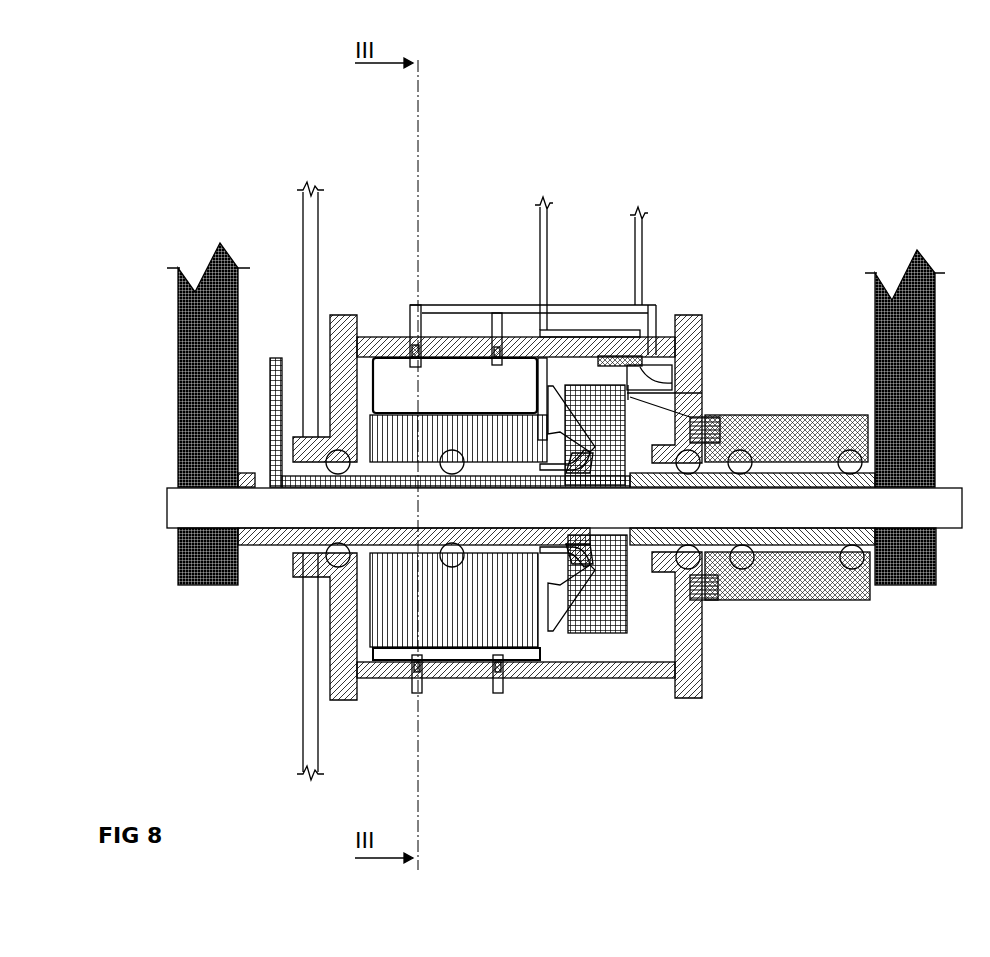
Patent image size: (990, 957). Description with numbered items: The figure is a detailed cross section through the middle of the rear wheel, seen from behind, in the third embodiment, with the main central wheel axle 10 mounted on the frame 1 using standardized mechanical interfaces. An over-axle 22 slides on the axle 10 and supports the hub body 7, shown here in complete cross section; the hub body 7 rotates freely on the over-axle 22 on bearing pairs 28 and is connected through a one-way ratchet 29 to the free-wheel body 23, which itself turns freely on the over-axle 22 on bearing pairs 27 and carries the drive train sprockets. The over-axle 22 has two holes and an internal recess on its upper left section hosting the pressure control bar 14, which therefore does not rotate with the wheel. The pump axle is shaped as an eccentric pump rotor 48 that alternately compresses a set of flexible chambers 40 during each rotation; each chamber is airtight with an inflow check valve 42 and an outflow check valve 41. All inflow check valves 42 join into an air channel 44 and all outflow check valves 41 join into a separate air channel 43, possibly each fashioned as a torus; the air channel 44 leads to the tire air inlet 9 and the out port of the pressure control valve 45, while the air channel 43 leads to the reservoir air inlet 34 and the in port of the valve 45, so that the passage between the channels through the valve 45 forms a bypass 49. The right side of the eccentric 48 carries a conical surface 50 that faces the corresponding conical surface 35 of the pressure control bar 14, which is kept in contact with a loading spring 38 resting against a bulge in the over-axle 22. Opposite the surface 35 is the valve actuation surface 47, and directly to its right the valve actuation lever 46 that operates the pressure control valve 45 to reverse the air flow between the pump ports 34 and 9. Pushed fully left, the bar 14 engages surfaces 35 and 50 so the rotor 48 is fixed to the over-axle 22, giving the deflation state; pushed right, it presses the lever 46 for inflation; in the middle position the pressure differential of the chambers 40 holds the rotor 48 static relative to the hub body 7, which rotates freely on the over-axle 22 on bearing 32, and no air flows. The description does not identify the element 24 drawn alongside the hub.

The frame 1 is at (220, 280).
The hub body 7 is at (345, 350).
The tire air inlet 9 is at (587, 360).
The main central wheel axle 10 is at (950, 520).
The pressure control bar 14 is at (272, 360).
The over-axle 22 is at (790, 478).
The free-wheel body 23 is at (785, 600).
The support 24 is at (317, 250).
The bearing pairs 27 is at (745, 565).
The bearing pairs 28 is at (323, 580).
The one-way ratchet 29 is at (720, 423).
The bearing 32 is at (447, 640).
The reservoir air inlet 34 is at (540, 330).
The conical surface 35 is at (578, 630).
The loading spring 38 is at (496, 693).
The flexible chambers 40 is at (385, 385).
The outflow check valve 41 is at (405, 358).
The inflow check valve 42 is at (497, 330).
The air channel 43 is at (416, 320).
The air channel 44 is at (556, 392).
The pressure control valve 45 is at (702, 348).
The valve actuation lever 46 is at (702, 368).
The valve actuation surface 47 is at (702, 393).
The eccentric pump rotor 48 is at (440, 440).
The bypass 49 is at (562, 420).
The conical surface 50 is at (587, 363).